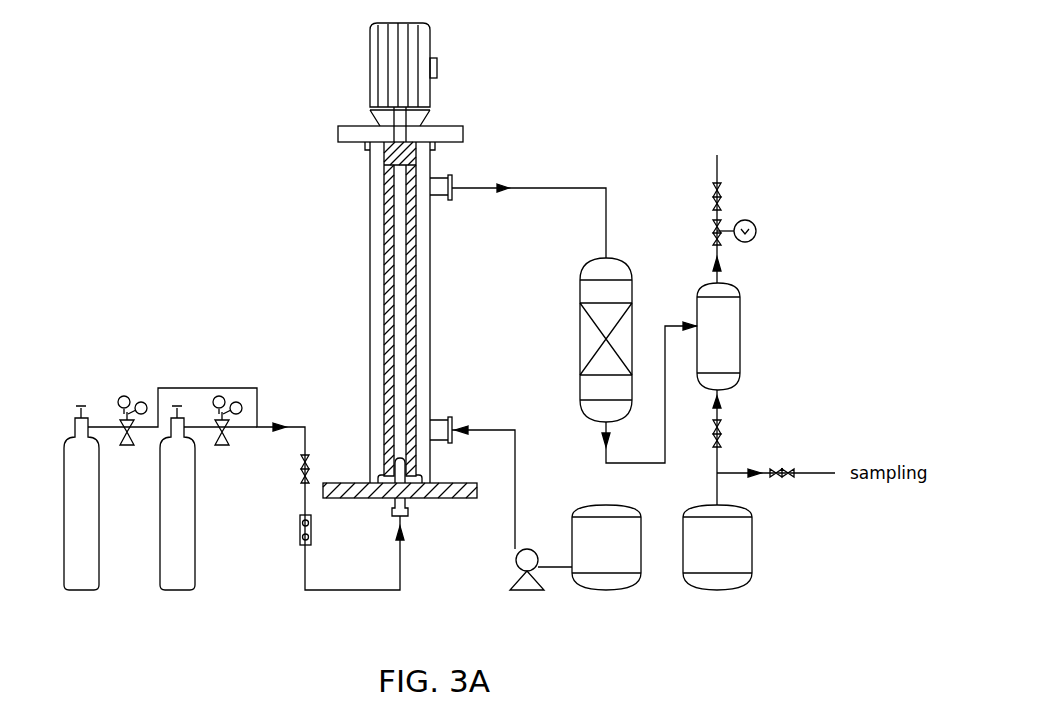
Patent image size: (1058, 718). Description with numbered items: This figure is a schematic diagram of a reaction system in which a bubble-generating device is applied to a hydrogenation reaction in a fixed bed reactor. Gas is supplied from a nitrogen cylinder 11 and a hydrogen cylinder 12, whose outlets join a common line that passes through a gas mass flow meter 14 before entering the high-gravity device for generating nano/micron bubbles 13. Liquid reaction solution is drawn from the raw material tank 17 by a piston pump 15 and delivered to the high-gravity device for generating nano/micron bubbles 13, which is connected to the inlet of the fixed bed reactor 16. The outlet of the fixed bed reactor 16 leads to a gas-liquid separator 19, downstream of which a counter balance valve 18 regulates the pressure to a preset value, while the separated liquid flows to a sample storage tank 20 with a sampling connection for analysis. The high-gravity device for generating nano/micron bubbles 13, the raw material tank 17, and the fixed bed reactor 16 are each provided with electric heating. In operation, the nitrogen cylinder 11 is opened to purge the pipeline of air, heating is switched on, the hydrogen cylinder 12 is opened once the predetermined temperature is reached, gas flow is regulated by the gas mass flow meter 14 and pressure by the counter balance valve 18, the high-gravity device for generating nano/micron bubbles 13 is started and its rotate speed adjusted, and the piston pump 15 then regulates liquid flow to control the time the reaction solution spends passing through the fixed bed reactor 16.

The nitrogen cylinder 11 is at (80, 590).
The hydrogen cylinder 12 is at (172, 590).
The high-gravity device for generating nano/micron bubbles 13 is at (338, 138).
The gas mass flow meter 14 is at (303, 530).
The piston pump 15 is at (525, 592).
The fixed bed reactor 16 is at (580, 340).
The raw material tank 17 is at (625, 590).
The counter balance valve 18 is at (756, 222).
The gas-liquid separator 19 is at (740, 337).
The sample storage tank 20 is at (725, 590).